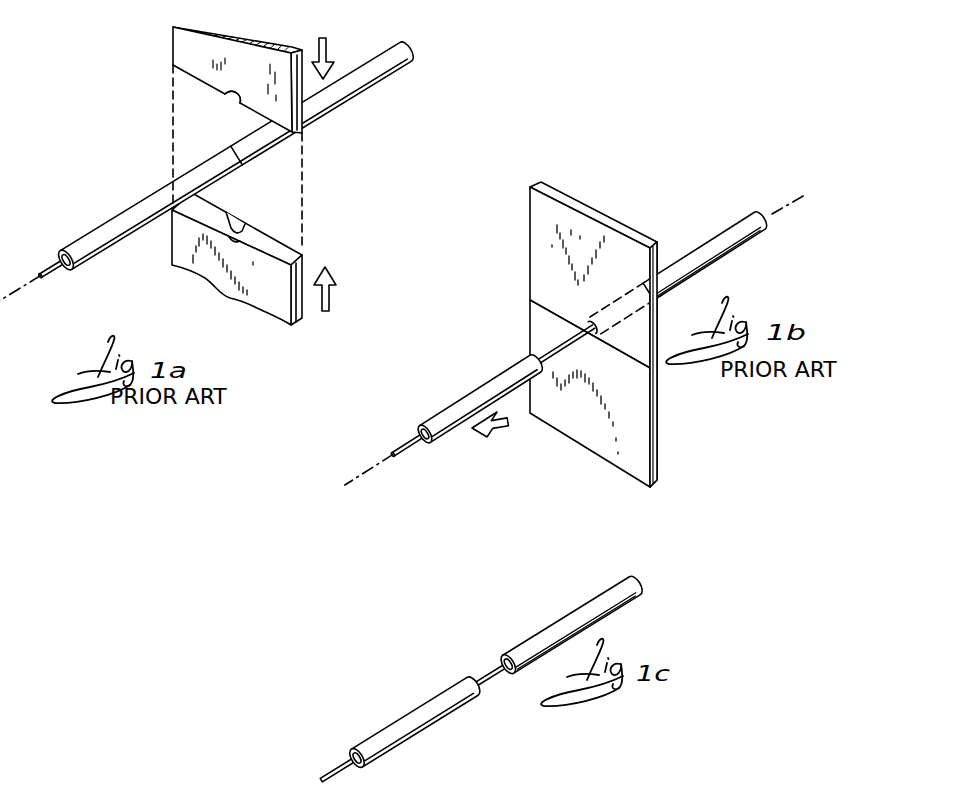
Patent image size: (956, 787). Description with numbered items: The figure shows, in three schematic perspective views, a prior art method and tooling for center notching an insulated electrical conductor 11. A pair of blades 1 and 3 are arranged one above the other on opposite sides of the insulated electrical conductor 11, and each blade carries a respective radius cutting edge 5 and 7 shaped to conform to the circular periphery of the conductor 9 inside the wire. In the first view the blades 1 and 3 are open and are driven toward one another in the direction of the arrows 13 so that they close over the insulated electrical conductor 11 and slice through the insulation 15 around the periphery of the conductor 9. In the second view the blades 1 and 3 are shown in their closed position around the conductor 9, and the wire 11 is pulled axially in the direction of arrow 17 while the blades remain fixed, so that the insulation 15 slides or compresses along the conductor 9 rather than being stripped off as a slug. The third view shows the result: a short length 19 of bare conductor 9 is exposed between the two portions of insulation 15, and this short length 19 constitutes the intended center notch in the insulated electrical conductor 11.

In FIG. 1A, the blade 1 is at (185, 45).
In FIG. 1B, the blade 1 is at (592, 238).
In FIG. 1A, the blade 3 is at (186, 250).
In FIG. 1B, the blade 3 is at (621, 416).
In FIG. 1A, the radius cutting edge 5 is at (229, 100).
In FIG. 1A, the radius cutting edge 7 is at (239, 219).
In FIG. 1A, the conductor 9 is at (42, 276).
In FIG. 1B, the conductor 9 is at (399, 452).
In FIG. 1C, the conductor 9 is at (353, 768).
In FIG. 1A, the insulated electrical conductor 11 is at (389, 77).
In FIG. 1B, the insulated electrical conductor 11 is at (480, 398).
In FIG. 1C, the insulated electrical conductor 11 is at (407, 706).
In FIG. 1A, the arrows 13 is at (327, 50).
In FIG. 1A, the insulation 15 is at (140, 206).
In FIG. 1B, the insulation 15 is at (731, 243).
In FIG. 1C, the insulation 15 is at (597, 606).
In FIG. 1B, the arrow 17 is at (508, 424).
In FIG. 1B, the short length 19 is at (560, 344).
In FIG. 1C, the short length 19 is at (489, 670).